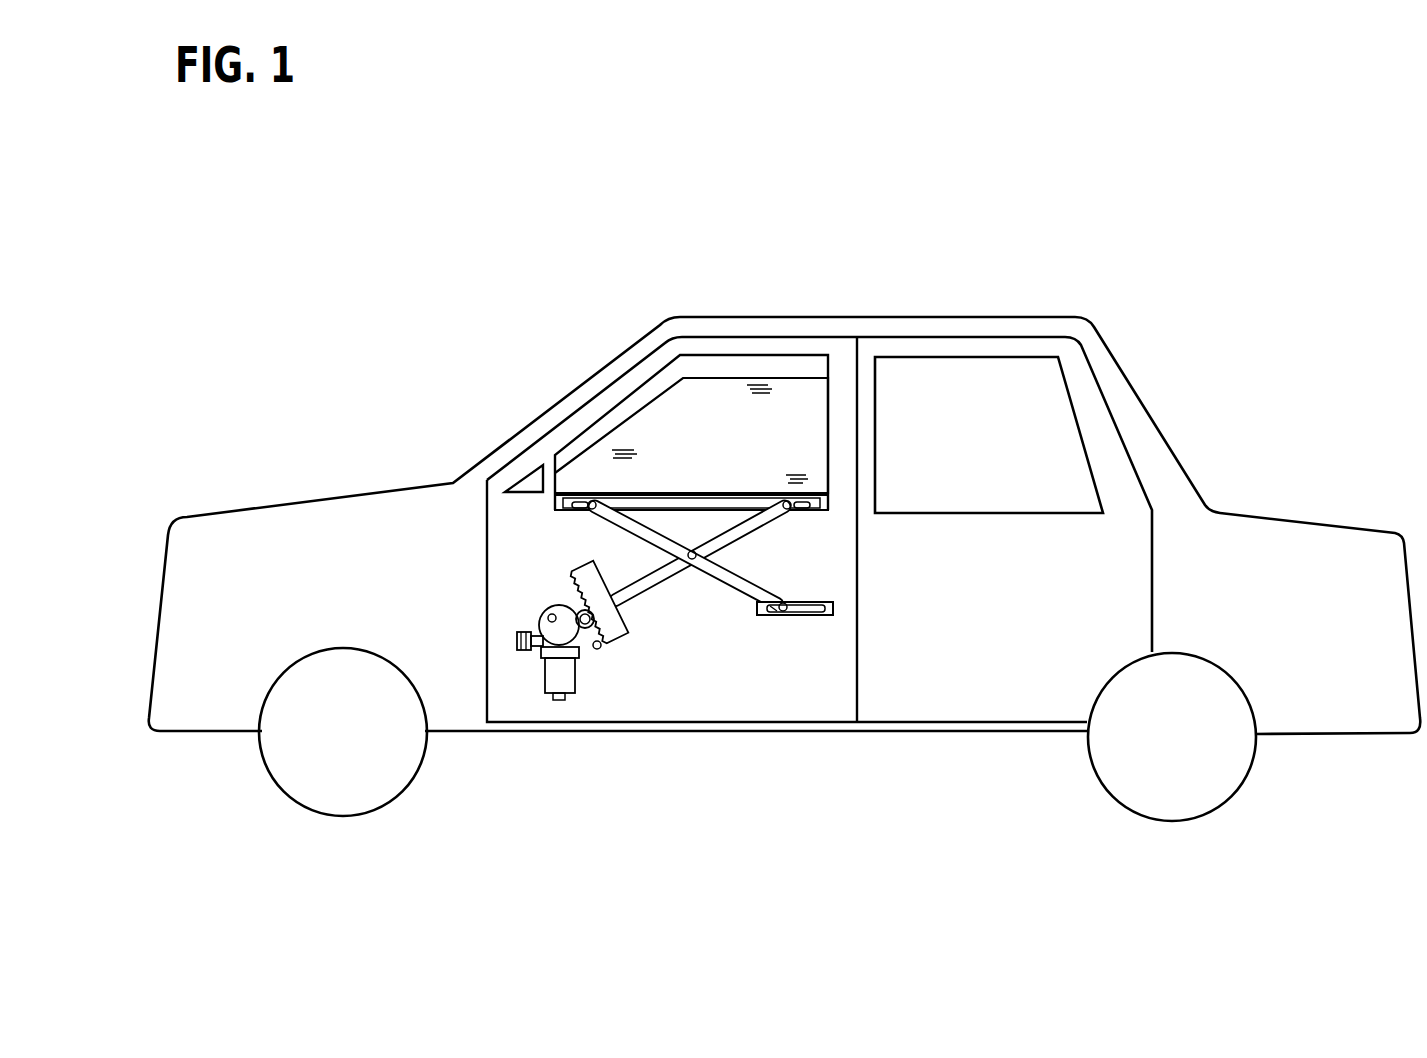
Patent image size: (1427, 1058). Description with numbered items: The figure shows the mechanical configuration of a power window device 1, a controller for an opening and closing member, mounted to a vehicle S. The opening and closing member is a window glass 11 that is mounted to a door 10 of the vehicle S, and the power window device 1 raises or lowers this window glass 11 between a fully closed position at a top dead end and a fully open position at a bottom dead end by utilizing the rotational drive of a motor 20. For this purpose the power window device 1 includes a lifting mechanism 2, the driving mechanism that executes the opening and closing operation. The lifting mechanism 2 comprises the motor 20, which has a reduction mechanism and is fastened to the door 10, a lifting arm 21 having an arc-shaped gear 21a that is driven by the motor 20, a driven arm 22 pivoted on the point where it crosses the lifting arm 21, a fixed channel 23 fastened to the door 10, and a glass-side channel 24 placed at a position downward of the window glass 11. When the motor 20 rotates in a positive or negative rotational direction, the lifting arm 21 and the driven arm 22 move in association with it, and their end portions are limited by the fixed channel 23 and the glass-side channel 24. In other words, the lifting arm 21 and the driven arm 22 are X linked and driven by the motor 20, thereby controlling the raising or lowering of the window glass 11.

The vehicle S is at (879, 152).
The power window device 1 is at (622, 413).
The door 10 is at (833, 700).
The window glass 11 is at (788, 390).
The lifting mechanism 2 is at (712, 607).
The motor 20 is at (545, 680).
The lifting arm 21 is at (750, 523).
The gear 21a is at (617, 637).
The driven arm 22 is at (627, 527).
The fixed channel 23 is at (803, 614).
The glass-side channel 24 is at (572, 505).